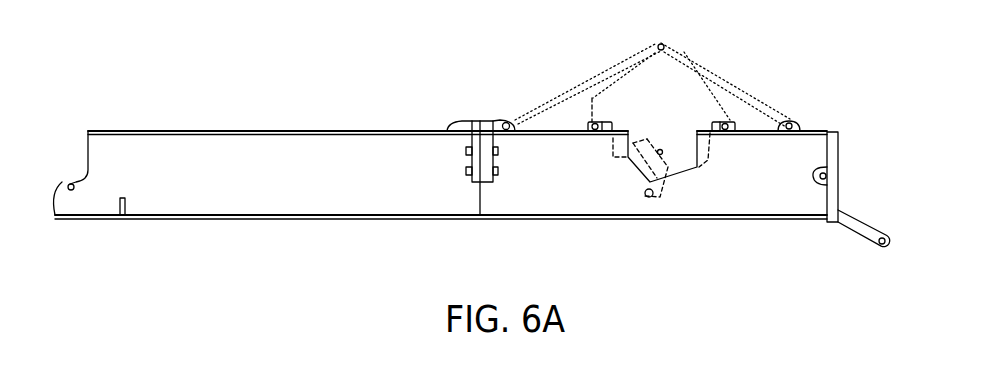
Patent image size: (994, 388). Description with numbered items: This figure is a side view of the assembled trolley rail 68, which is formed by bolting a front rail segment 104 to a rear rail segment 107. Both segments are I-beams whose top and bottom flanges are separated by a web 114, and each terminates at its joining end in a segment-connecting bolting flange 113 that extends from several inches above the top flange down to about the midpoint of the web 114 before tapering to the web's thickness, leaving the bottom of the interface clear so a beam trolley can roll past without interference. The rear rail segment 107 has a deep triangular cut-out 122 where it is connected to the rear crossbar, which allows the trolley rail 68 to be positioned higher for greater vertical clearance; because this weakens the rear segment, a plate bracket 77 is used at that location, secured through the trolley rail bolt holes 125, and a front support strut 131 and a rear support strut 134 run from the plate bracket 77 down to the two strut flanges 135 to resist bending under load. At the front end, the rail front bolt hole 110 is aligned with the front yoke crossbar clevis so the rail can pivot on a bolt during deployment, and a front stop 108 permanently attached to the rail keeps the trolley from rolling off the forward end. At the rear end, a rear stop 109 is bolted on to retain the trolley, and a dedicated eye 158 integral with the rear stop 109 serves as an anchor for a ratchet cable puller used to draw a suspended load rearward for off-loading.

The trolley rail 68 is at (325, 97).
The plate bracket 77 is at (685, 98).
The front rail segment 104 is at (282, 197).
The rear rail segment 107 is at (772, 195).
The front stop 108 is at (122, 213).
The rear stop 109 is at (836, 167).
The rail front bolt hole 110 is at (68, 185).
The segment-connecting bolting flange 113 is at (474, 126).
The web 114 is at (230, 185).
The cut-out 122 is at (637, 172).
The trolley rail bolt holes 125 is at (588, 120).
The front support strut 131 is at (622, 67).
The rear support strut 134 is at (698, 65).
The strut flanges 135 is at (503, 122).
The dedicated eye 158 is at (853, 225).